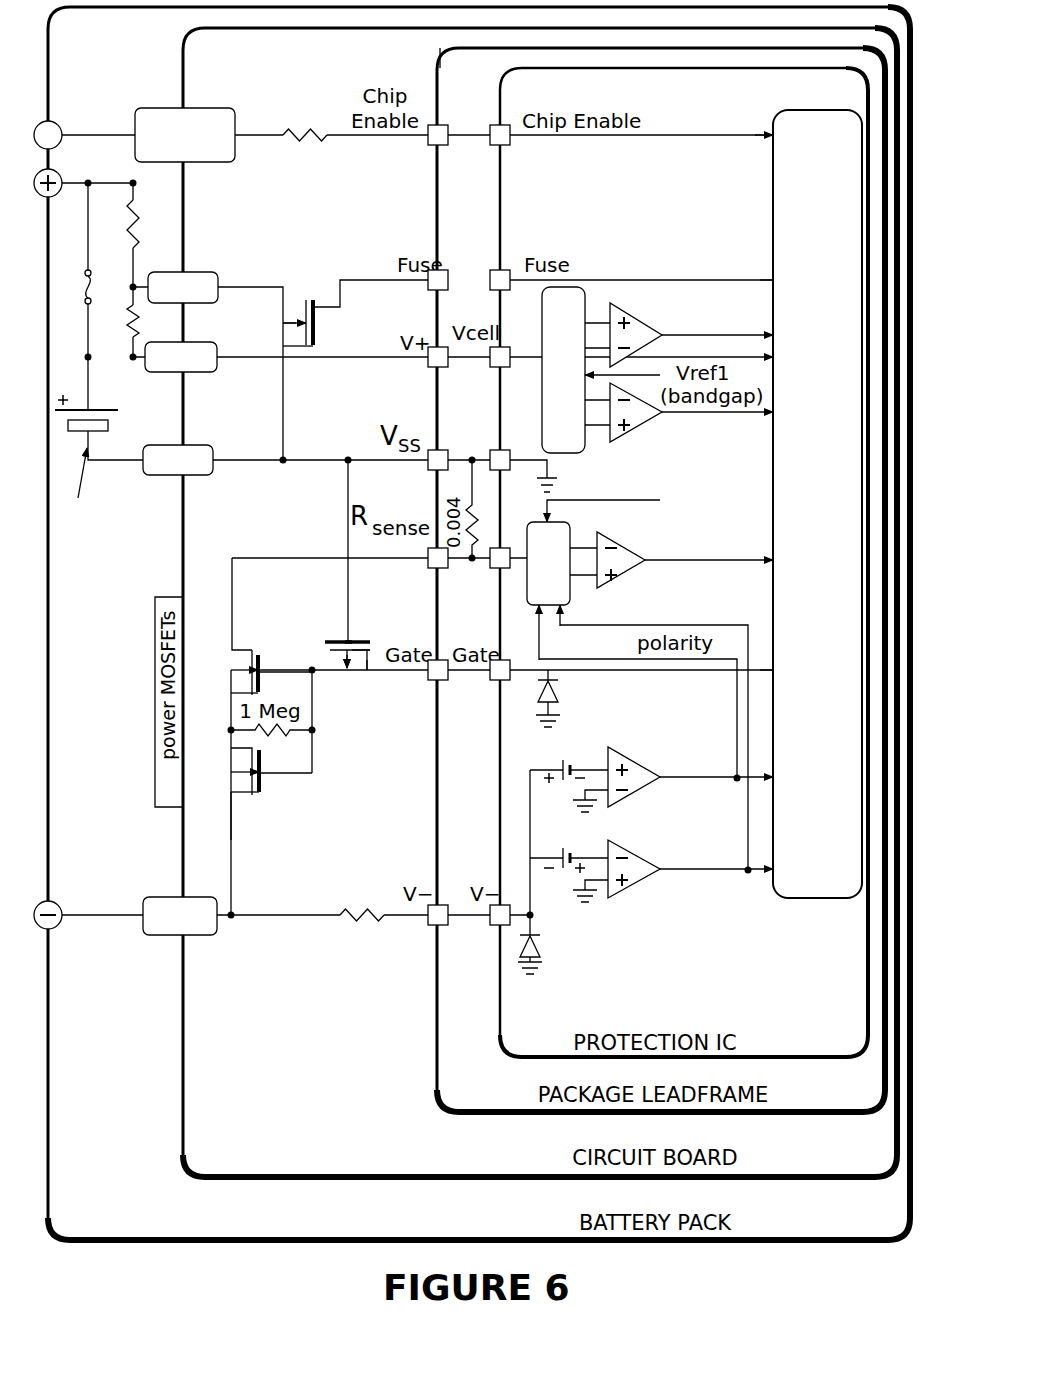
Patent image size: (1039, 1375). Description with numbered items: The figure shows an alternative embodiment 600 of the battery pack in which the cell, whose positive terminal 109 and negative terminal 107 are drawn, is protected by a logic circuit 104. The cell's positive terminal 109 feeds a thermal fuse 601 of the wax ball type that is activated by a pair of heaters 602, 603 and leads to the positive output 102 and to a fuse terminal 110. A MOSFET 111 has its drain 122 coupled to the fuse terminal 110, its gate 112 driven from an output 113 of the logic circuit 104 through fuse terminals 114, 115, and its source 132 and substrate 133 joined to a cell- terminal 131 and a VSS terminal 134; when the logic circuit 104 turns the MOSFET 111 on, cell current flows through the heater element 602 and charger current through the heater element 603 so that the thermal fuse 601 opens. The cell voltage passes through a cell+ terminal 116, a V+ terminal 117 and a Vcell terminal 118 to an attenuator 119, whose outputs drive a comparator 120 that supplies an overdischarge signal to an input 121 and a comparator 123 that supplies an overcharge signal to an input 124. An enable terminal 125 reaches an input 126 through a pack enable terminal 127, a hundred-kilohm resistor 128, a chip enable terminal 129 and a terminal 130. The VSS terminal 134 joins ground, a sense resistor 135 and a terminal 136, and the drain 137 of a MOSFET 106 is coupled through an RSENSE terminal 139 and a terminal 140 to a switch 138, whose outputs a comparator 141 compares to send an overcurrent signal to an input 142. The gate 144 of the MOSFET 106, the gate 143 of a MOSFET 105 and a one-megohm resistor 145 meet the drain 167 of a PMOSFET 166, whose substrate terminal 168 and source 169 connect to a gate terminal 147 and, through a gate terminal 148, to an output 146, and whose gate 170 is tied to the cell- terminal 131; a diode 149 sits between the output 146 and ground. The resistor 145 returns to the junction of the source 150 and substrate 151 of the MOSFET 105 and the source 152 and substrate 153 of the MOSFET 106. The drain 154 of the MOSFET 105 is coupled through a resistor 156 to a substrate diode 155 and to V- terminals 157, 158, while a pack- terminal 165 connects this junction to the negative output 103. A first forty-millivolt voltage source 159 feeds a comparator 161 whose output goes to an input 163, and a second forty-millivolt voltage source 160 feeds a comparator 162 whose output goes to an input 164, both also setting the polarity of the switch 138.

The logic circuit 104 is at (776, 116).
The enable terminal 125 is at (58, 122).
The positive output 102 is at (64, 176).
The negative output 103 is at (58, 928).
The pack enable terminal 127 is at (188, 108).
The 100K ohm resistor 128 is at (282, 128).
The chip enable terminal 129 is at (446, 124).
The terminal 130 is at (508, 124).
The input of logic circuit 126 is at (780, 135).
The thermal fuse 601 is at (88, 302).
The heater element 602 is at (150, 312).
The heater element 603 is at (134, 230).
The fuse terminal 110 is at (218, 278).
The cell+ terminal 116 is at (208, 348).
The cell- terminal 131 is at (212, 450).
The positive terminal 109 is at (96, 406).
The negative terminal 107 is at (108, 426).
The MOSFET 111 is at (310, 298).
The drain 122 is at (298, 306).
The substrate 133 is at (282, 322).
The gate 112 is at (335, 333).
The source 132 is at (312, 346).
The fuse terminal 114 is at (436, 292).
The fuse terminal 115 is at (502, 292).
The output of logic circuit 113 is at (780, 280).
The V+ terminal 117 is at (434, 368).
The Vcell terminal 118 is at (494, 368).
The VSS terminal 134 is at (442, 449).
The terminal 136 is at (502, 449).
The RSENSE terminal 139 is at (434, 568).
The terminal 140 is at (498, 569).
The gate terminal 147 is at (440, 681).
The gate terminal 148 is at (496, 660).
The output of logic circuit 146 is at (780, 670).
The V- terminal 157 is at (436, 926).
The V- terminal 158 is at (496, 926).
The sense resistor 135 is at (528, 546).
The switch 138 is at (570, 600).
The attenuator 119 is at (598, 434).
The comparator 120 is at (642, 322).
The input of logic circuit 121 is at (780, 335).
The comparator 123 is at (628, 432).
The input of logic circuit 124 is at (780, 412).
The comparator 141 is at (632, 585).
The input of logic circuit 142 is at (780, 560).
The drain 167 is at (328, 640).
The gate 170 is at (348, 636).
The PMOSFET 166 is at (368, 648).
The substrate terminal 168 is at (346, 672).
The source 169 is at (368, 672).
The drain 137 is at (240, 645).
The MOSFET 106 is at (258, 652).
The gate 144 is at (259, 664).
The substrate 153 is at (238, 668).
The source 152 is at (236, 694).
The 1 Meg ohm resistor 145 is at (254, 750).
The gate 143 is at (262, 788).
The source 150 is at (236, 771).
The substrate 151 is at (236, 792).
The MOSFET 105 is at (266, 796).
The drain 154 is at (233, 805).
The pack- terminal 165 is at (206, 936).
The resistor 156 is at (368, 908).
The diode 149 is at (556, 686).
The substrate diode 155 is at (540, 938).
The first 40 millivolt voltage source 159 is at (550, 770).
The comparator 161 is at (652, 782).
The input of logic circuit 163 is at (780, 778).
The second 40 millivolt voltage source 160 is at (576, 852).
The comparator 162 is at (650, 862).
The input of logic circuit 164 is at (780, 870).
The alternative embodiment 600 is at (702, 1288).